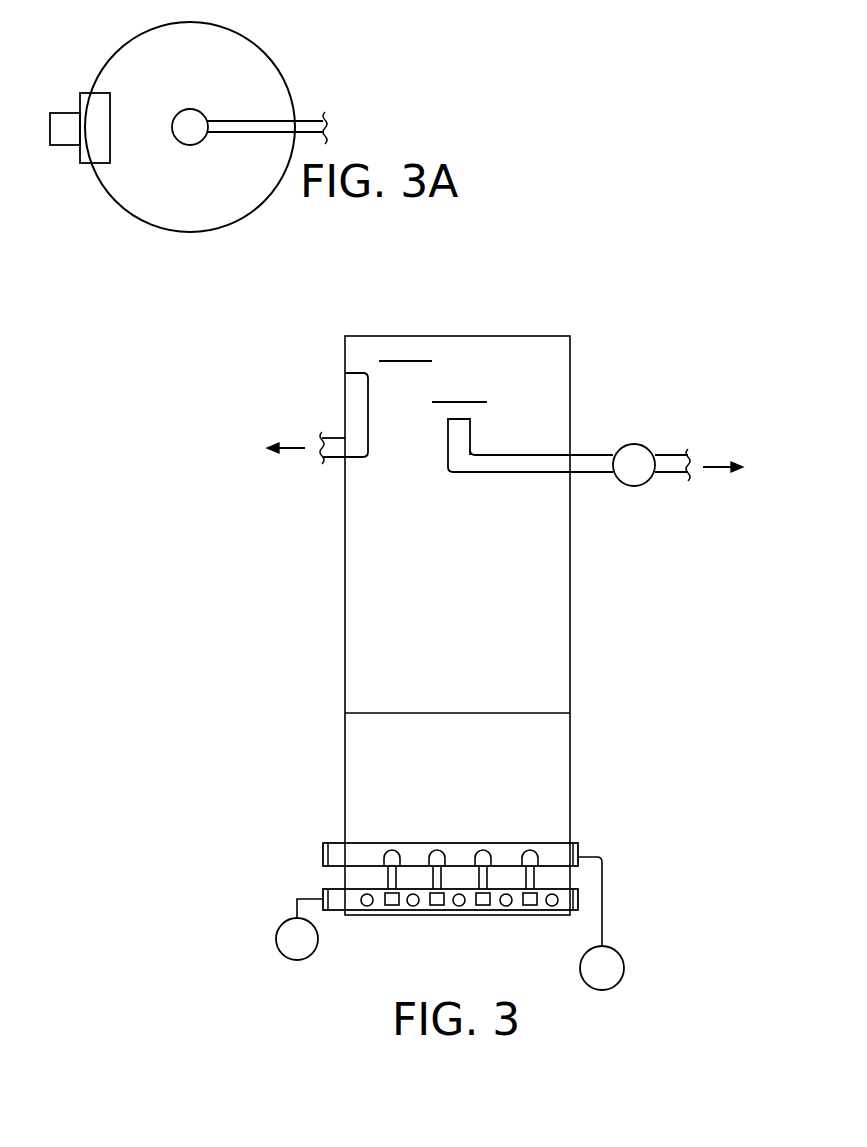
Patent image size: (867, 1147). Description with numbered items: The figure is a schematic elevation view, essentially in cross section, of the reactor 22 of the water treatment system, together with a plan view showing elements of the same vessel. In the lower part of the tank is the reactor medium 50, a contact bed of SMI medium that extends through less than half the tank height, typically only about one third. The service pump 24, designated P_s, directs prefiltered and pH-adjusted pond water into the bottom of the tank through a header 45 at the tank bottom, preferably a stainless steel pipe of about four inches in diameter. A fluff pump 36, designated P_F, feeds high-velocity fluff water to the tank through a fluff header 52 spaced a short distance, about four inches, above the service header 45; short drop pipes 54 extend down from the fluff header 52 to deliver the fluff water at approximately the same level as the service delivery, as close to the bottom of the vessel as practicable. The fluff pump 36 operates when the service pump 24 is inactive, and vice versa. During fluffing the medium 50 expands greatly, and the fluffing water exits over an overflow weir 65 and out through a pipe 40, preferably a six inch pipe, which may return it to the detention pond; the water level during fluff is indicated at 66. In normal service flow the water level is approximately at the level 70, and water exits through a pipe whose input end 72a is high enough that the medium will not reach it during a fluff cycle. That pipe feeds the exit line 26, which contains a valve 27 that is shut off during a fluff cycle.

In FIG. 3, the reactor 22 is at (570, 592).
In FIG. 3, the service pump 24 is at (276, 938).
In FIG. 3, the exit line 26 is at (677, 455).
In FIG. 3, the valve 27 is at (645, 482).
In FIG. 3, the fluff pump 36 is at (597, 990).
In FIG. 3, the pipe 40 is at (332, 458).
In FIG. 3, the header 45 is at (338, 916).
In FIG. 3, the reactor medium 50 is at (383, 733).
In FIG. 3, the fluff header 52 is at (555, 855).
In FIG. 3, the drop pipes 54 is at (537, 880).
In FIG. 3A, the overflow weir 65 is at (95, 146).
In FIG. 3, the overflow weir 65 is at (357, 388).
In FIG. 3, the water level during fluff 66 is at (413, 361).
In FIG. 3, the water level 70 is at (474, 402).
In FIG. 3, the input end 72a is at (470, 421).